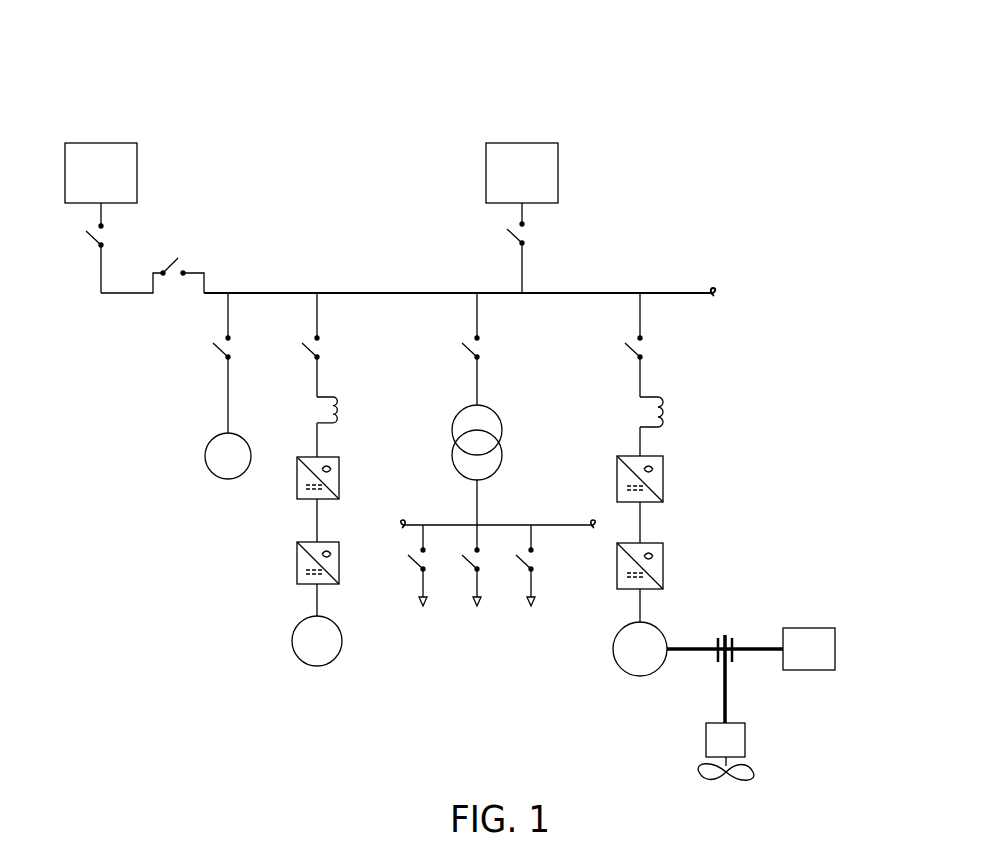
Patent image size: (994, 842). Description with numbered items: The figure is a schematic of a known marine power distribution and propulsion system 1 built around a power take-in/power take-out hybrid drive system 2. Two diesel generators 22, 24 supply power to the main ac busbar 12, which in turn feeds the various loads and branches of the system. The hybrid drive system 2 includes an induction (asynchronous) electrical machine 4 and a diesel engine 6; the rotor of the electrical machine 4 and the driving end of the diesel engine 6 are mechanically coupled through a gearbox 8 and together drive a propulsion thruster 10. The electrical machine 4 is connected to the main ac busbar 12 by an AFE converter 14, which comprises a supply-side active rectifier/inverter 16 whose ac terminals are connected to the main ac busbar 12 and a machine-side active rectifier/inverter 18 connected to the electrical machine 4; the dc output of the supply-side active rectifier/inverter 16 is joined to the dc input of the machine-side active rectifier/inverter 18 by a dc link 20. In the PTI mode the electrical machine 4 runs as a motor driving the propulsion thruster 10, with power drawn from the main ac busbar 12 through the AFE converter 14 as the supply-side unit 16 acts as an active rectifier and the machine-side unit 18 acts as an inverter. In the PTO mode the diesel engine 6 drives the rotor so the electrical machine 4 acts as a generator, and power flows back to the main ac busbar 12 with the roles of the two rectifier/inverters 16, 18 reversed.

The marine propulsion system 1 is at (540, 68).
The hybrid drive system 2 is at (752, 627).
The electrical machine 4 is at (640, 677).
The diesel engine 6 is at (806, 628).
The gearbox 8 is at (734, 660).
The propulsion thruster 10 is at (745, 740).
The main ac busbar 12 is at (677, 292).
The AFE converter 14 is at (674, 500).
The supply-side active rectifier/inverter 16 is at (663, 458).
The machine-side active rectifier/inverter 18 is at (663, 565).
The dc link 20 is at (642, 520).
The diesel generator 22 is at (137, 172).
The diesel generator 24 is at (559, 172).